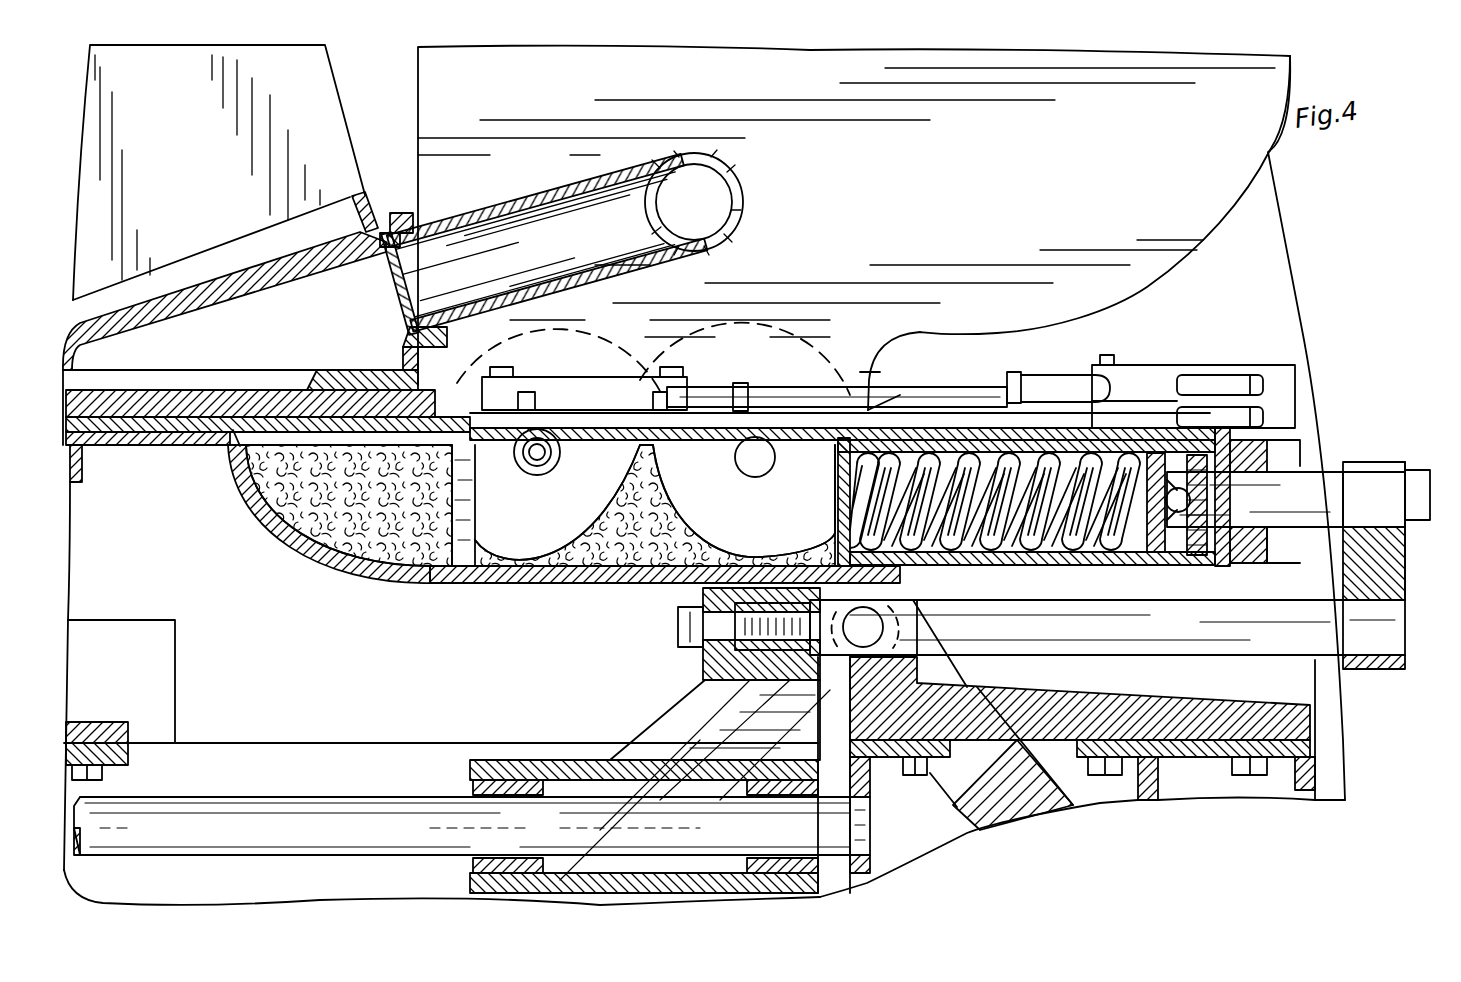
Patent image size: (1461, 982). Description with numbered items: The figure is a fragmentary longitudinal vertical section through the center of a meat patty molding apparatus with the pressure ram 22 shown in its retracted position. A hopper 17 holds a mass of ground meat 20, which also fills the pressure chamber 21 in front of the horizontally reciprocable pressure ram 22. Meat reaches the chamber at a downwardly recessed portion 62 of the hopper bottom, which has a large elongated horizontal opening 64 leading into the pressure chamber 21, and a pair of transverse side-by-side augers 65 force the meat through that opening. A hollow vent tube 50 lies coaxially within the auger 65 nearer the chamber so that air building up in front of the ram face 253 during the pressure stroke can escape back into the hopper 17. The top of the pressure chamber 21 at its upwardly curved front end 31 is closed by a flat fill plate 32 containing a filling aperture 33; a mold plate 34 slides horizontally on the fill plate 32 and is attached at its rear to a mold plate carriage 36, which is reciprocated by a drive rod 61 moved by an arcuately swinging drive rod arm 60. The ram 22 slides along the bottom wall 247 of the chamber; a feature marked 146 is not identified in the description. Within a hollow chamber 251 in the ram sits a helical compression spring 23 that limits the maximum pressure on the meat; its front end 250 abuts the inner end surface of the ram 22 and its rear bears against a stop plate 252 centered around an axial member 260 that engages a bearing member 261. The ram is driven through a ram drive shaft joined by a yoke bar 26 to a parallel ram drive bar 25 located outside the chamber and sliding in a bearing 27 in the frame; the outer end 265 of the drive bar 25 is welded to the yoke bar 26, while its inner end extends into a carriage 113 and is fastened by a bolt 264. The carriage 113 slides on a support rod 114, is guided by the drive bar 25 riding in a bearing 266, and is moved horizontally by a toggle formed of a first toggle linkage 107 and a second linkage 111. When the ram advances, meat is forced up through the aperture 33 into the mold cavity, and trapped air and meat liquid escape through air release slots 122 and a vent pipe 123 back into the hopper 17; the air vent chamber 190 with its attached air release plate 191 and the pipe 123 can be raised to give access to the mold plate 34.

The hopper 17 is at (1040, 176).
The ground meat 20 is at (370, 510).
The pressure chamber 21 is at (345, 565).
The pressure ram 22 is at (970, 560).
The helical compression spring 23 is at (1048, 555).
The ram drive bar 25 is at (1220, 642).
The yoke bar 26 is at (1390, 555).
The bearing 27 is at (1335, 475).
The upwardly curved front end 31 is at (250, 490).
The fill plate 32 is at (325, 440).
The filling aperture 33 is at (235, 468).
The mold plate 34 is at (103, 390).
The mold plate carriage 36 is at (605, 385).
The hollow tube 50 is at (533, 462).
The drive rod arm 60 is at (1160, 378).
The drive rod 61 is at (975, 388).
The downwardly recessed portion 62 is at (870, 372).
The elongated horizontal opening 64 is at (640, 528).
The augers 65 is at (600, 484).
The first toggle linkage 107 is at (980, 808).
The second linkage 111 is at (600, 812).
The carriage 113 is at (680, 722).
The support rod 114 is at (378, 810).
The air release slots 122 is at (212, 378).
The pipe 123 is at (535, 200).
The divider 146 is at (660, 445).
The air vent chamber 190 is at (232, 278).
The air release plate 191 is at (355, 385).
The bottom wall 247 is at (750, 575).
The front end 250 is at (842, 490).
The hollow chamber 251 is at (1117, 557).
The stop plate 252 is at (1195, 555).
The ram face 253 is at (838, 478).
The axial member 260 is at (1320, 498).
The bearing member 261 is at (1190, 493).
The bolt 264 is at (680, 628).
The outer end 265 is at (1378, 668).
The bearing 266 is at (905, 616).